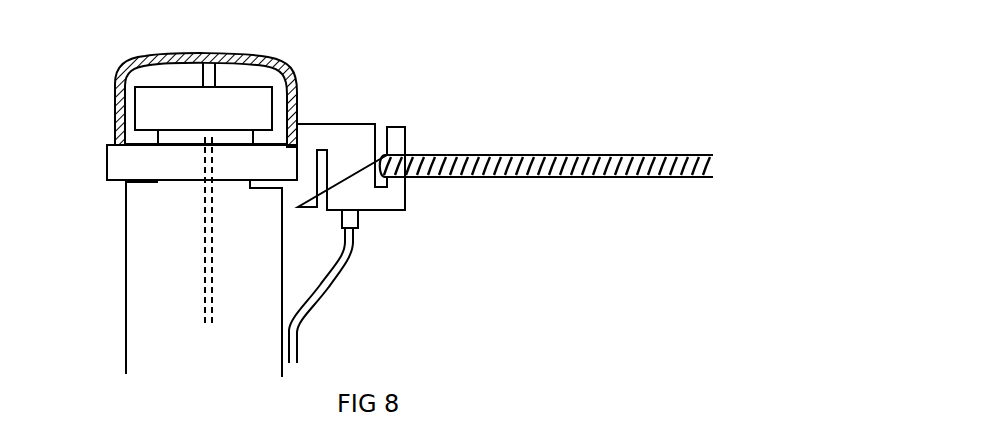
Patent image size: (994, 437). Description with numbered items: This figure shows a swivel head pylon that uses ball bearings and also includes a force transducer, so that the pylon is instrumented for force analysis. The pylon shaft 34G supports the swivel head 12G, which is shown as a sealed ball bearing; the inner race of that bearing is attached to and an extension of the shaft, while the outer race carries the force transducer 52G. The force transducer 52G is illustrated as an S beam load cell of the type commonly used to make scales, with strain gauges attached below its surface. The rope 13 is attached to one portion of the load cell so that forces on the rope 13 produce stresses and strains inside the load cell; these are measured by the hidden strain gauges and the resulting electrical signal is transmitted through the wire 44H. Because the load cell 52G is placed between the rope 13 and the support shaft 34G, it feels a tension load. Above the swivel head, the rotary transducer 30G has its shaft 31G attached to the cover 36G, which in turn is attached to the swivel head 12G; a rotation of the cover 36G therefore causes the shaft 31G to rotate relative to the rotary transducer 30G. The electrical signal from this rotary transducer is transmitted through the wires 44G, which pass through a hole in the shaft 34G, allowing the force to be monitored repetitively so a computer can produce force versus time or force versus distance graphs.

The cover 36G is at (130, 73).
The rotary transducer 30G is at (258, 85).
The shaft 31G is at (200, 82).
The swivel head 12G is at (107, 155).
The pylon shaft 34G is at (126, 220).
The wires 44G is at (203, 280).
The force transducer 52G is at (348, 124).
The wire 44H is at (327, 282).
The rope 13 is at (493, 178).